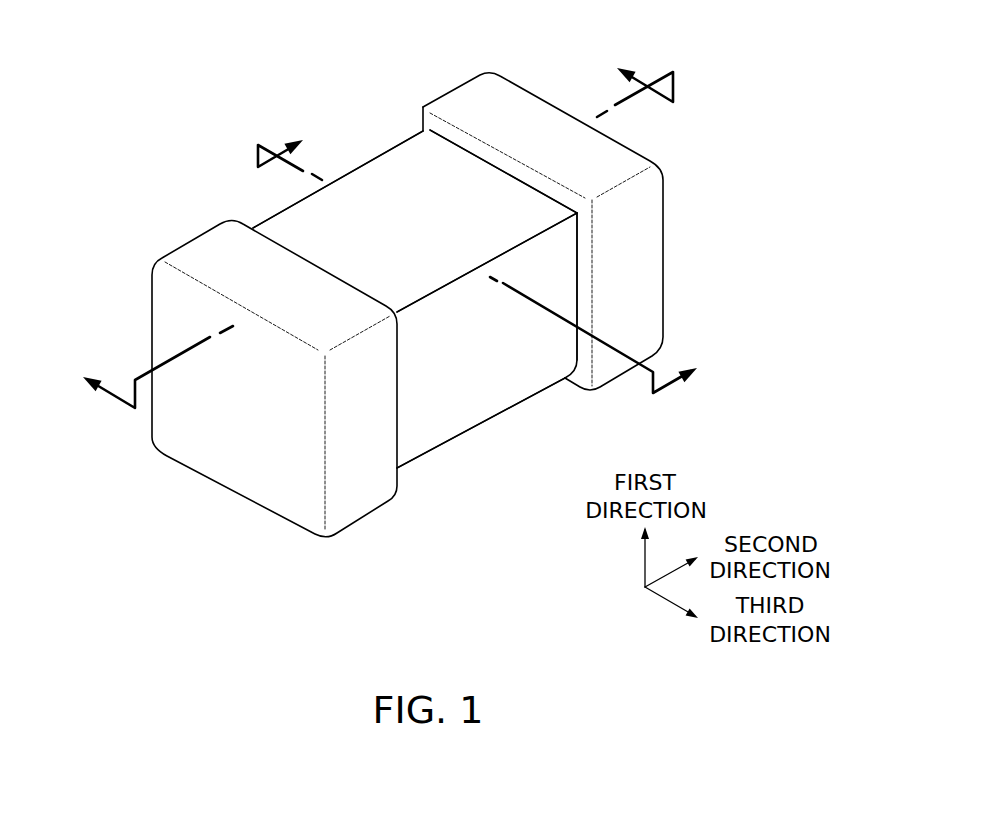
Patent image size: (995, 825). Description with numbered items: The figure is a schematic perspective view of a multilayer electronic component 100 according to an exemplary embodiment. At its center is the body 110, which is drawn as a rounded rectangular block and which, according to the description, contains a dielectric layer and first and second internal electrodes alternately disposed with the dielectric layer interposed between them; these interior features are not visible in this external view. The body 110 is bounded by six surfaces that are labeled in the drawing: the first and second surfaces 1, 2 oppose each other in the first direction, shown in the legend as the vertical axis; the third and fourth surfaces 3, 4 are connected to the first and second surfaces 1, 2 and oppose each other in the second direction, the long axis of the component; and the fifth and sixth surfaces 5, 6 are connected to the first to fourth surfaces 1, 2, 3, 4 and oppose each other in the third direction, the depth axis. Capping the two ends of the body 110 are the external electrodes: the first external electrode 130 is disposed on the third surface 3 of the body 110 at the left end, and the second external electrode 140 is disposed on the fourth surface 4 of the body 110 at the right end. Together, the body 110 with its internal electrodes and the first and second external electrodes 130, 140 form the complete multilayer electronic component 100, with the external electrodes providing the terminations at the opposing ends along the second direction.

The multilayer electronic component 100 is at (190, 39).
The body 110 is at (287, 242).
The first external electrode 130 is at (207, 243).
The second external electrode 140 is at (463, 100).
The first surface 1 is at (448, 395).
The second surface 2 is at (420, 187).
The third surface 3 is at (242, 442).
The fourth surface 4 is at (615, 245).
The fifth surface 5 is at (365, 205).
The sixth surface 6 is at (508, 365).